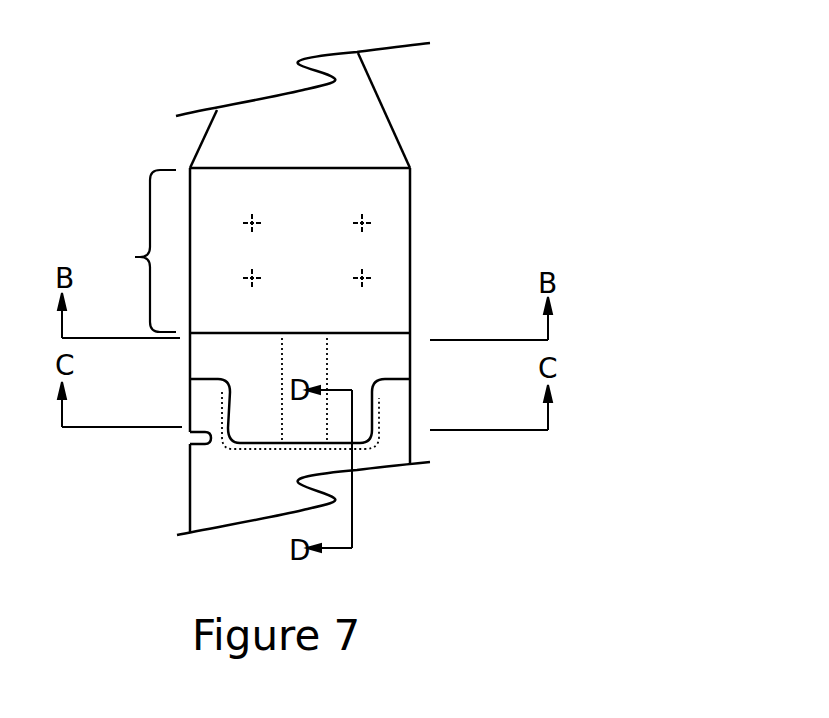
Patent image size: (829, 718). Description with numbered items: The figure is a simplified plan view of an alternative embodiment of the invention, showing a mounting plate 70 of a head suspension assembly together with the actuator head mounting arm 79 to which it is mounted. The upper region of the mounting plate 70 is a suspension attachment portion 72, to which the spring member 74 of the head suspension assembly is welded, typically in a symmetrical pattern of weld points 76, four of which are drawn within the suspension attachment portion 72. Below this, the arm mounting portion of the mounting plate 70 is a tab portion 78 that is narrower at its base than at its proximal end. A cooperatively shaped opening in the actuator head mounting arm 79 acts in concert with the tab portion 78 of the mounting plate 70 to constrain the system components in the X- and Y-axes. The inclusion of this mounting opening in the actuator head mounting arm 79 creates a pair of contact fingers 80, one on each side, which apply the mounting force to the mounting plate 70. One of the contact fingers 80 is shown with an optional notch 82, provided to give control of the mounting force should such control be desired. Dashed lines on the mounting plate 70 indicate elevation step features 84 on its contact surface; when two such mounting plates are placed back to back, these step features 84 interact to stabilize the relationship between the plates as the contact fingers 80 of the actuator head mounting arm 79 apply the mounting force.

The mounting plate 70 is at (365, 367).
The suspension attachment portion 72 is at (139, 251).
The spring member 74 is at (362, 123).
The weld points 76 is at (364, 225).
The tab portion 78 is at (358, 430).
The actuator head mounting arm 79 is at (235, 508).
The contact fingers 80 is at (205, 403).
The notch 82 is at (190, 435).
The elevation step features 84 is at (283, 400).